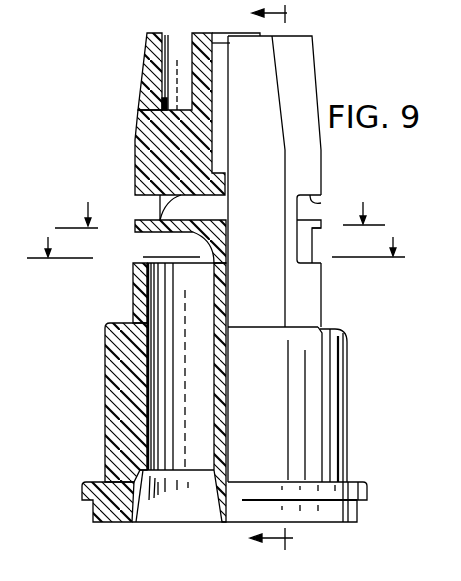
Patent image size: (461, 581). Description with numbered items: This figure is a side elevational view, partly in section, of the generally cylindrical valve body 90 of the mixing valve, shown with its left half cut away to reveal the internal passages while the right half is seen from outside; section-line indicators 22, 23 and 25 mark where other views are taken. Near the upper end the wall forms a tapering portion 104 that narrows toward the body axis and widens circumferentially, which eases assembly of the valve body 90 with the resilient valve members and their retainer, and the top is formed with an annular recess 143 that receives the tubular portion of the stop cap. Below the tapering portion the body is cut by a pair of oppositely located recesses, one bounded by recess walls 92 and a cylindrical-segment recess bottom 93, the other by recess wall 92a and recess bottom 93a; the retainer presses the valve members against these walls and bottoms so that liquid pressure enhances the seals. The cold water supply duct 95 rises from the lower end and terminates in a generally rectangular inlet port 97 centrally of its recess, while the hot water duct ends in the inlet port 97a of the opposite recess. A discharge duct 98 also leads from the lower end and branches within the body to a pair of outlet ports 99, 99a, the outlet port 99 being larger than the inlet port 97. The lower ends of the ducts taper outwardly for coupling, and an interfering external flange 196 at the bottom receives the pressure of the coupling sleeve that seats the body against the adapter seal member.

The valve body 90 is at (126, 105).
The tapering portion 104 is at (147, 62).
The annular recess 143 is at (162, 113).
The outlet port 99 is at (140, 202).
The discharge duct 98 is at (136, 228).
The inlet port 97 is at (141, 258).
The recess bottom 93 is at (135, 290).
The recess wall 92 is at (112, 323).
The cold water supply duct 95 is at (150, 388).
The external flange 196 is at (94, 481).
The outlet port 99a is at (363, 182).
The inlet port 97a is at (316, 233).
The recess bottom 93a is at (323, 313).
The recess wall 92a is at (333, 327).
The section line 22 is at (222, 221).
The section line 23 is at (215, 254).
The section line 25 is at (285, 278).